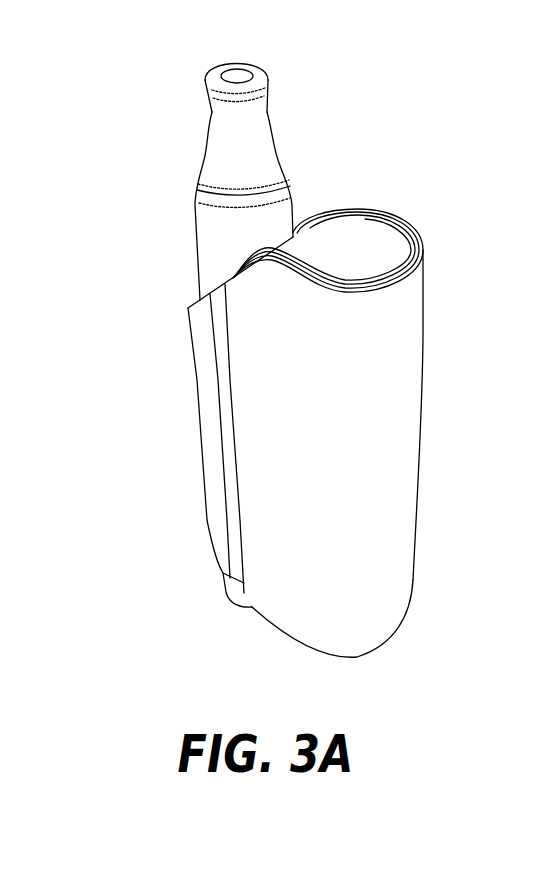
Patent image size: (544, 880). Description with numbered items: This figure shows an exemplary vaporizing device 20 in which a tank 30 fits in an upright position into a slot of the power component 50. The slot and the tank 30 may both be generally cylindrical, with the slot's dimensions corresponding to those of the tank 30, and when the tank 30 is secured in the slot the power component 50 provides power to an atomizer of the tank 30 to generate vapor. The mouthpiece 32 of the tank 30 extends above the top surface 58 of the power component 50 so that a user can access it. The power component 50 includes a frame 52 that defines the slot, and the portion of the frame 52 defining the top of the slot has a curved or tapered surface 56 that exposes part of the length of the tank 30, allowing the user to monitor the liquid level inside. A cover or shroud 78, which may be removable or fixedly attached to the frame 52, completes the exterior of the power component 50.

The vaporizing device 20 is at (99, 136).
The tank 30 is at (178, 239).
The mouthpiece 32 is at (212, 113).
The power component 50 is at (434, 433).
The frame 52 is at (210, 433).
The curved or tapered surface 56 is at (232, 271).
The top surface 58 is at (373, 235).
The shroud 78 is at (402, 562).